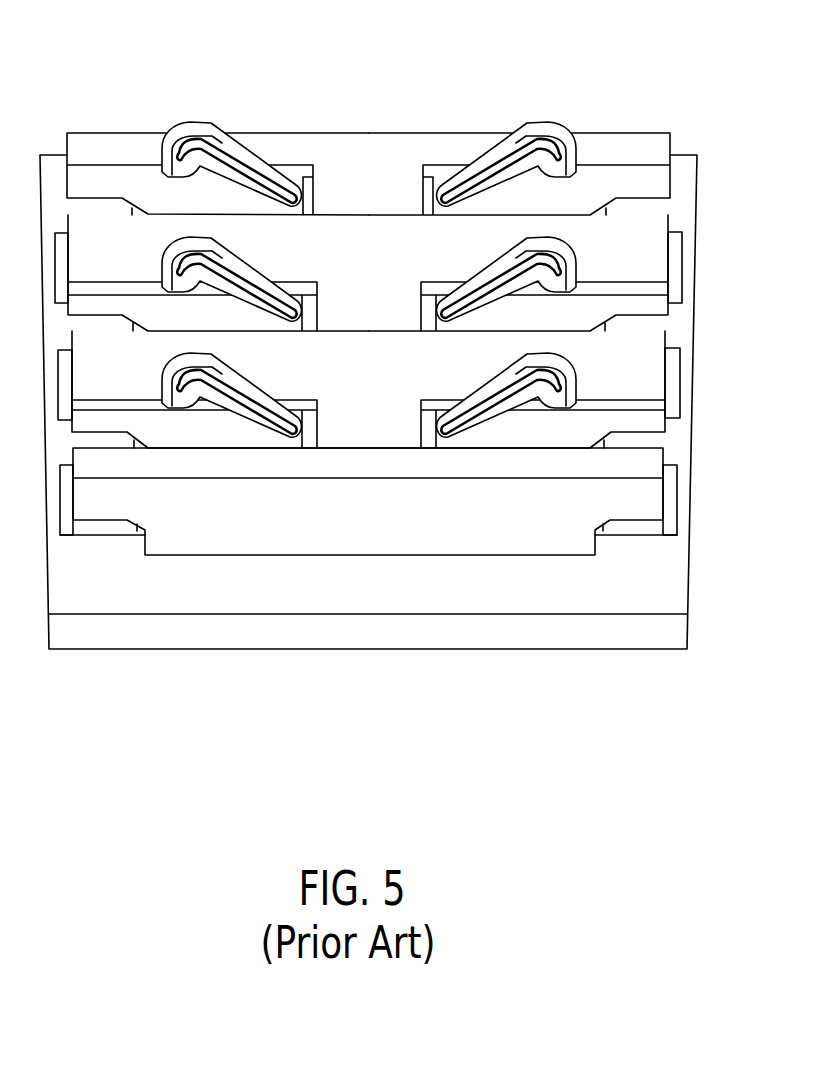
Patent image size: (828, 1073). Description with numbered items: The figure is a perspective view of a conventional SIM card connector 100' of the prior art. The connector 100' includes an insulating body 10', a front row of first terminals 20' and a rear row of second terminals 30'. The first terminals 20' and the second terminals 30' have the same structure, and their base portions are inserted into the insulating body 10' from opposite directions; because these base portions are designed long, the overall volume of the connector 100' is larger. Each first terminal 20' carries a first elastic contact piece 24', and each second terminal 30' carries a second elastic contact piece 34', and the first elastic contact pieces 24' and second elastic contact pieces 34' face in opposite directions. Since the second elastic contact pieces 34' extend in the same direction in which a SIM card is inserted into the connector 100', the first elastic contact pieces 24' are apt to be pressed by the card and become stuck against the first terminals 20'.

The conventional SIM card connector 100' is at (372, 329).
The insulating body 10' is at (368, 342).
The first terminals 20' is at (537, 253).
The first elastic contact piece 24' is at (506, 247).
The second terminals 30' is at (212, 246).
The second elastic contact piece 34' is at (231, 240).